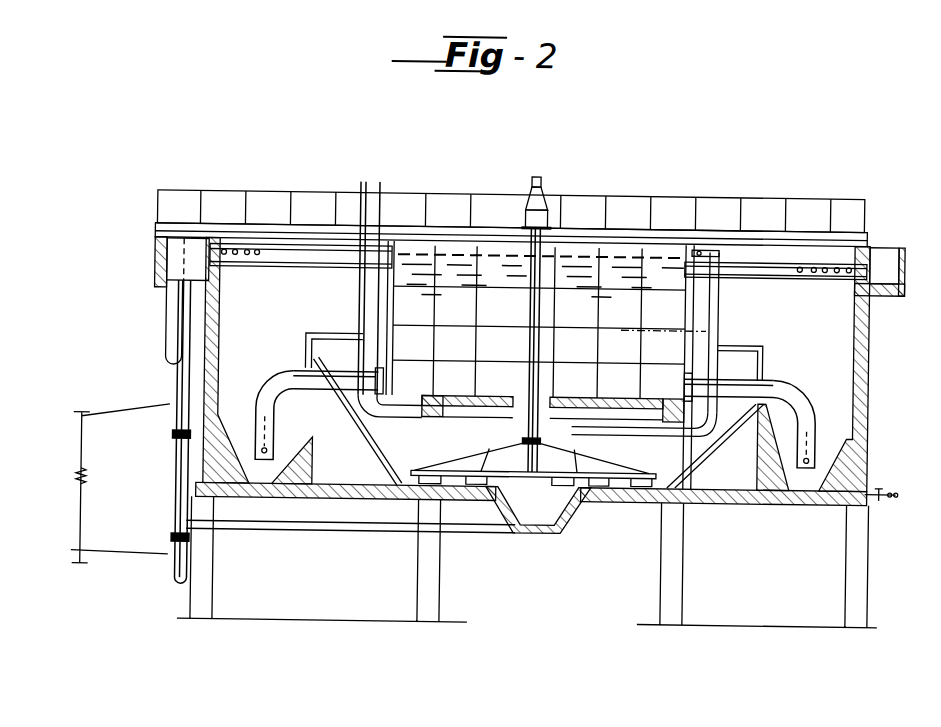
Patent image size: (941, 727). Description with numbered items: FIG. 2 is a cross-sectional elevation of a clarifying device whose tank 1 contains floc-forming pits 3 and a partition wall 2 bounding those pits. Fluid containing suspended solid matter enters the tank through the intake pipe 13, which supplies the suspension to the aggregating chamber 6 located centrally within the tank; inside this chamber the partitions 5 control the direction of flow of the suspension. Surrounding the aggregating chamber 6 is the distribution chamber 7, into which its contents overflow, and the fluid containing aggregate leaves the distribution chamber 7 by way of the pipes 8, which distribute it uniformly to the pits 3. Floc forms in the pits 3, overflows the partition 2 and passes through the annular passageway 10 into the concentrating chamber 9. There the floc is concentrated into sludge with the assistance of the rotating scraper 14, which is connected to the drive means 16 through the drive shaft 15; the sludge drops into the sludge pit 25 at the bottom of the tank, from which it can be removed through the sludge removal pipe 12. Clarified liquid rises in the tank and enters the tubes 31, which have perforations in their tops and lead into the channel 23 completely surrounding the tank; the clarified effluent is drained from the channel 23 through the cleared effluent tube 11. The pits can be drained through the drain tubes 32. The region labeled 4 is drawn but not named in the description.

The tank 1 is at (205, 377).
The partition wall 2 is at (305, 347).
The floc-forming pits 3 is at (806, 487).
The outer chamber block 4 is at (230, 302).
The partitions 5 is at (629, 255).
The aggregating chamber 6 is at (669, 314).
The distribution chamber 7 is at (389, 420).
The pipes 8 is at (342, 346).
The concentrating chamber 9 is at (371, 455).
The annular passageway 10 is at (326, 340).
The cleared effluent tube 11 is at (168, 334).
The sludge removal pipe 12 is at (463, 532).
The intake pipe 13 is at (177, 464).
The rotating scraper 14 is at (578, 498).
The drive shaft 15 is at (540, 339).
The drive means 16 is at (538, 182).
The channel 23 is at (893, 228).
The sludge pit 25 is at (570, 523).
The perforated tubes 31 is at (760, 260).
The drain tubes 32 is at (882, 483).